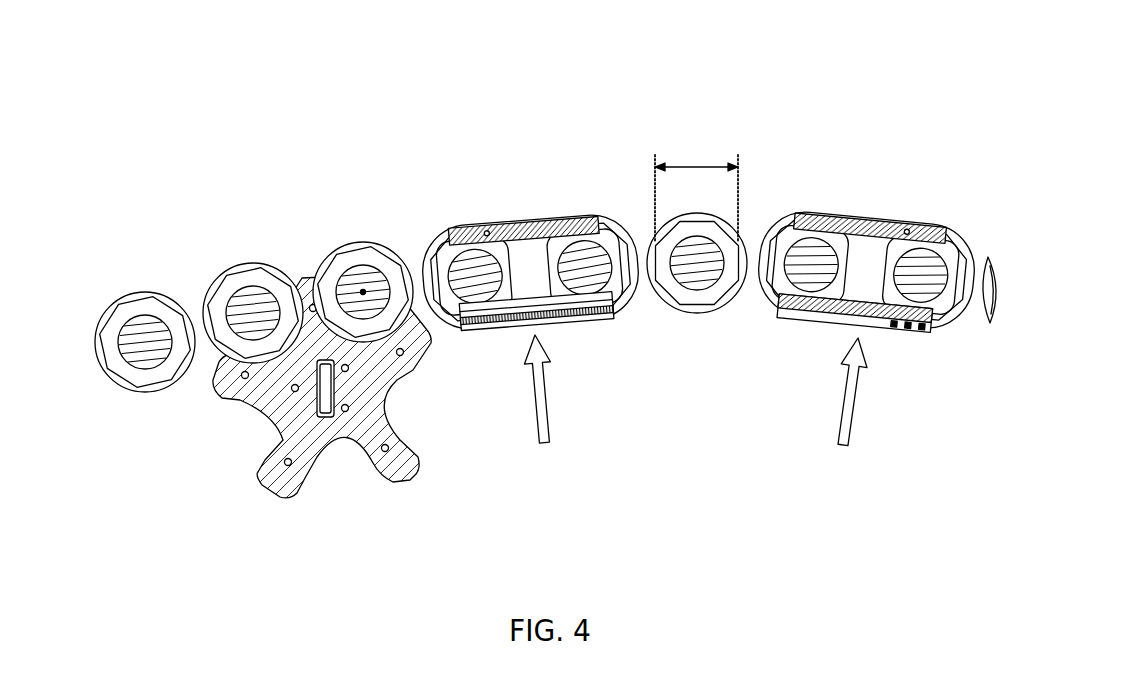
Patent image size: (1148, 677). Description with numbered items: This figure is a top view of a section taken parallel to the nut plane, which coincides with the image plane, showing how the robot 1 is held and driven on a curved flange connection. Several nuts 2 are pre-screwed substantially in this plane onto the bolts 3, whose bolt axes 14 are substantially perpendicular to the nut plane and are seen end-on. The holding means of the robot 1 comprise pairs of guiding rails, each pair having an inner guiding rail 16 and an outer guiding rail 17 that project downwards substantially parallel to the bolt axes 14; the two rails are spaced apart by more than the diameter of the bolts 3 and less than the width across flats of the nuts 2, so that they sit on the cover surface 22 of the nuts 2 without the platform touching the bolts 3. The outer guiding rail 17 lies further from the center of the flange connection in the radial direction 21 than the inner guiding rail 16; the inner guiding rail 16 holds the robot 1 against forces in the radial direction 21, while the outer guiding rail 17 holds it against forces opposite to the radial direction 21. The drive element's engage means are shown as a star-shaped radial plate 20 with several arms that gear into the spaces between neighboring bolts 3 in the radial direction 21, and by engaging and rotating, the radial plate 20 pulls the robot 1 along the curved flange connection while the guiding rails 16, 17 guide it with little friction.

The robot 1 is at (933, 80).
The nuts 2 is at (239, 272).
The bolts 3 is at (250, 308).
The bolt axes 14 is at (363, 292).
The inner guiding rail 16 is at (510, 300).
The outer guiding rail 17 is at (528, 237).
The star-shaped radial plate 20 is at (357, 413).
The radial direction 21 is at (538, 395).
The cover surface 22 is at (440, 266).